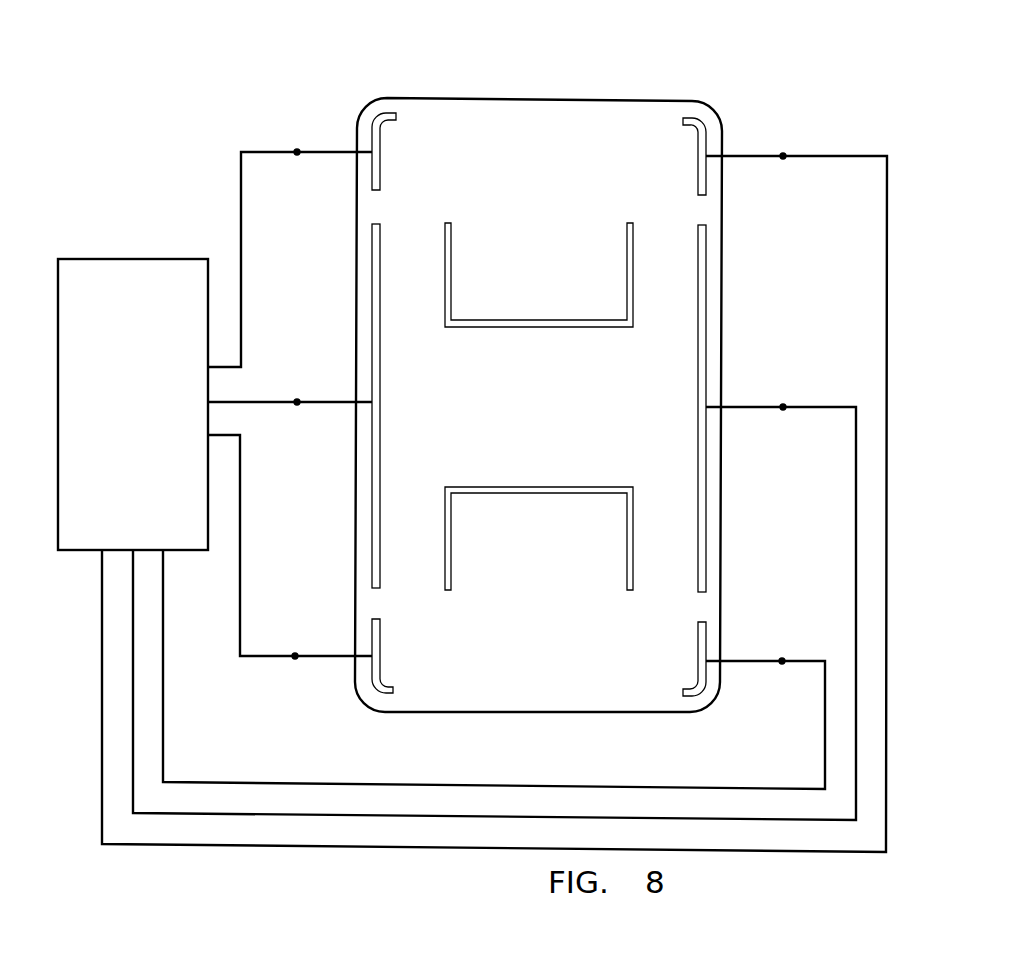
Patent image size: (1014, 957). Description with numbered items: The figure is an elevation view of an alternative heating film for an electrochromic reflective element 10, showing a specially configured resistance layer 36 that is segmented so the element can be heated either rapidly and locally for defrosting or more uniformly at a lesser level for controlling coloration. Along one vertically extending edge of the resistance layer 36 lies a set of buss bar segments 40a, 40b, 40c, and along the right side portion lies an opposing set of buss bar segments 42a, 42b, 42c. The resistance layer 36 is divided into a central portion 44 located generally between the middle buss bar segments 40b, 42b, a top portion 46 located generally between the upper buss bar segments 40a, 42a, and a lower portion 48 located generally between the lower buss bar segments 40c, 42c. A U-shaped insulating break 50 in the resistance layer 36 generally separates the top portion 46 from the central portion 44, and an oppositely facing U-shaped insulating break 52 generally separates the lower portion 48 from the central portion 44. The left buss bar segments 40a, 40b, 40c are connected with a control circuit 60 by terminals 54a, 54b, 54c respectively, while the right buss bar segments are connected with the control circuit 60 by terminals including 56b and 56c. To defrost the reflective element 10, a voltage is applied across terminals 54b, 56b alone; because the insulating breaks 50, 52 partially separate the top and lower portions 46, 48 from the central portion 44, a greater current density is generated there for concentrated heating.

The electrochromic reflective element 10 is at (563, 84).
The heating film resistance layer 36 is at (533, 655).
The buss bar segment 40a is at (372, 173).
The buss bar segment 40b is at (372, 486).
The buss bar segment 40c is at (372, 640).
The buss bar segment 42a is at (707, 187).
The buss bar segment 42b is at (707, 490).
The buss bar segment 42c is at (704, 648).
The central portion 44 is at (552, 418).
The top portion 46 is at (555, 259).
The lower portion 48 is at (554, 580).
The U-shaped insulating break 50 is at (552, 327).
The U-shaped insulating break 52 is at (588, 487).
The terminal 54a is at (332, 150).
The terminal 54b is at (333, 400).
The terminal 54c is at (335, 659).
The terminal 56b is at (742, 156).
The terminal 56c is at (743, 663).
The control circuit 60 is at (128, 259).